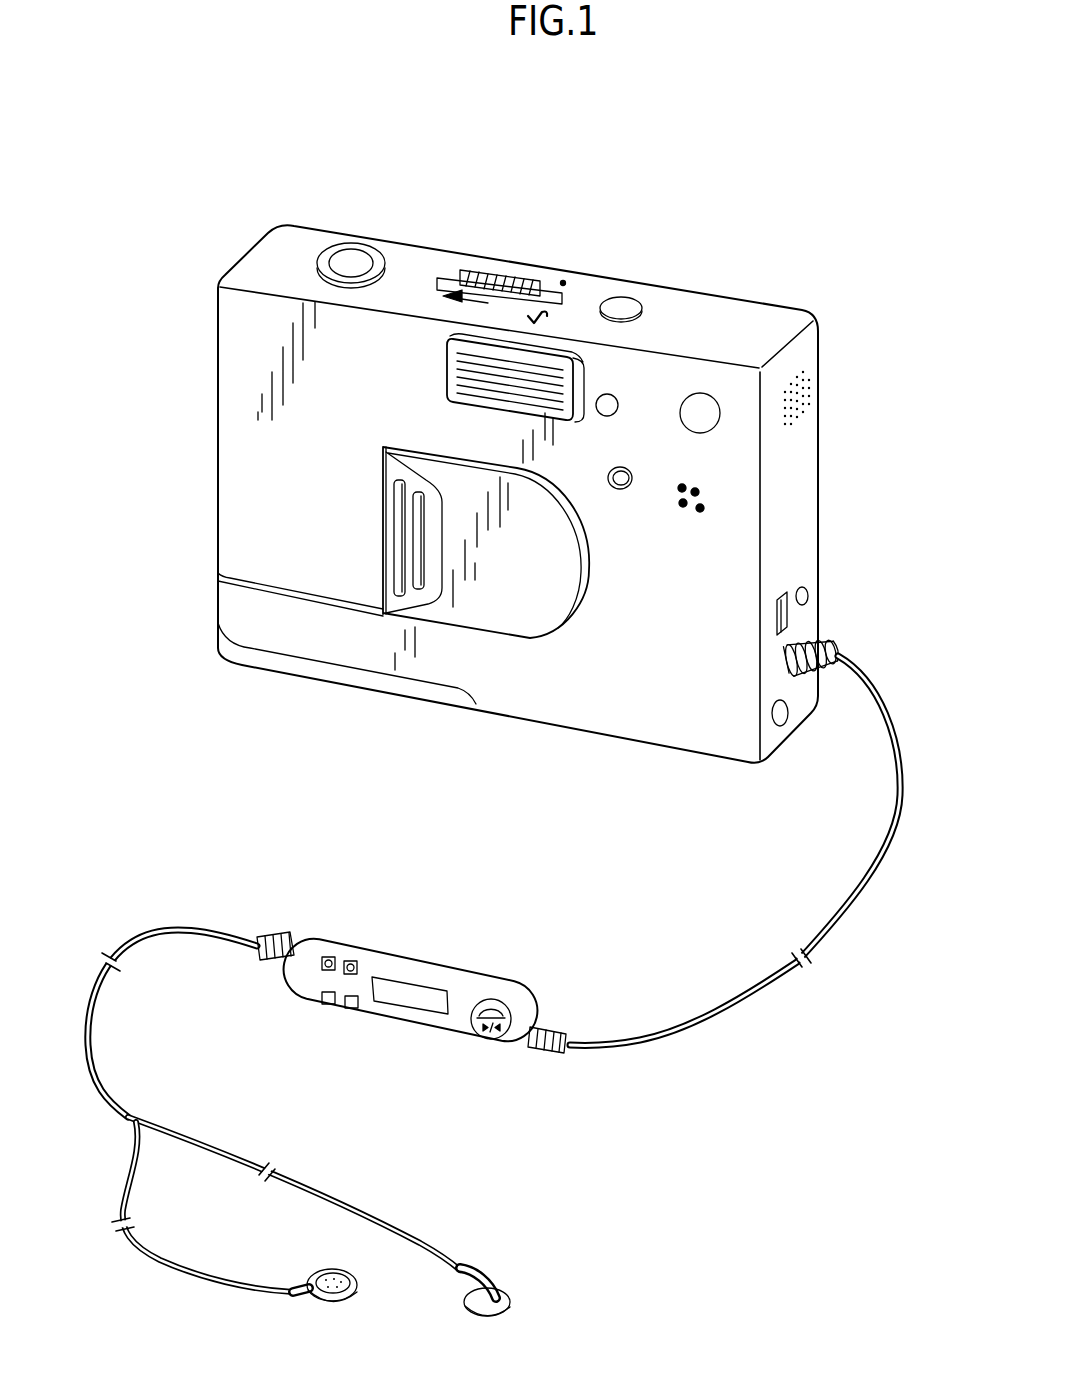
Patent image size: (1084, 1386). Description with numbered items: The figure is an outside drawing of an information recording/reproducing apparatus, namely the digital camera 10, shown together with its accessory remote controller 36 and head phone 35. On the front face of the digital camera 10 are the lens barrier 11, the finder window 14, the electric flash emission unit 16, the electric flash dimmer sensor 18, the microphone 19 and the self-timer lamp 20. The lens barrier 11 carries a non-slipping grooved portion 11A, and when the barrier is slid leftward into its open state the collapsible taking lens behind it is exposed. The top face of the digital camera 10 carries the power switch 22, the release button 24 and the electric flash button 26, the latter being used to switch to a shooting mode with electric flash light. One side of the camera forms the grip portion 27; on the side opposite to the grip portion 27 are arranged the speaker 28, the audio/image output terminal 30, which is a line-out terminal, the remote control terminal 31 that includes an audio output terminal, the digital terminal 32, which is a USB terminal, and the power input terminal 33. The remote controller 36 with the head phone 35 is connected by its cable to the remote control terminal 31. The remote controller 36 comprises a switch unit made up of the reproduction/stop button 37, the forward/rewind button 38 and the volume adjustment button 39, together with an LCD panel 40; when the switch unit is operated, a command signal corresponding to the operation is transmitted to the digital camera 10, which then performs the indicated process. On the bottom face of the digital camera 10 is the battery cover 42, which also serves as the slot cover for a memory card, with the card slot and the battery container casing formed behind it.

The digital camera 10 is at (522, 455).
The lens barrier 11 is at (486, 621).
The non-slipping grooved portion 11A is at (369, 599).
The finder window 14 is at (772, 444).
The electric flash emission unit 16 is at (474, 378).
The electric flash dimmer sensor 18 is at (637, 388).
The microphone 19 is at (771, 514).
The self-timer lamp 20 is at (634, 521).
The power switch 22 is at (501, 256).
The release button 24 is at (374, 226).
The electric flash button 26 is at (636, 269).
The grip portion 27 is at (481, 494).
The speaker 28 is at (840, 378).
The audio/image output terminal 30 is at (848, 590).
The remote control terminal 31 is at (756, 682).
The digital terminal 32 is at (727, 631).
The power input terminal 33 is at (800, 763).
The head phone 35 is at (446, 1280).
The remote controller 36 is at (420, 1011).
The reproduction/stop button 37 is at (527, 979).
The forward/rewind button 38 is at (323, 1041).
The volume adjustment button 39 is at (332, 919).
The LCD panel 40 is at (401, 1047).
The battery cover 42 is at (320, 662).